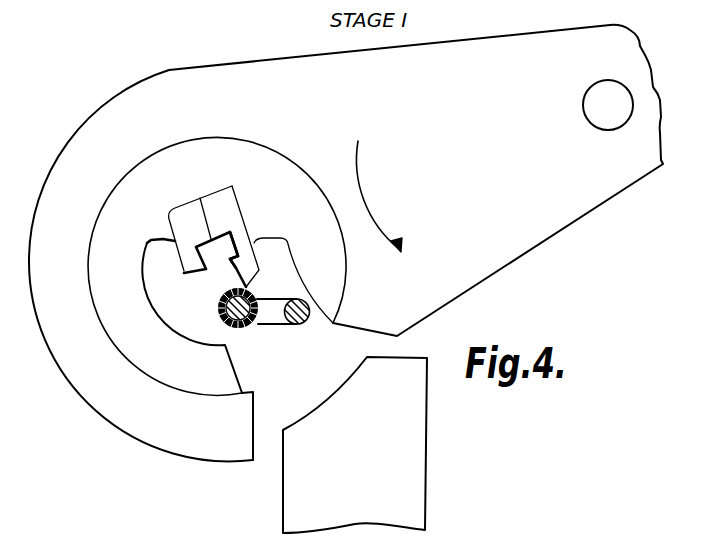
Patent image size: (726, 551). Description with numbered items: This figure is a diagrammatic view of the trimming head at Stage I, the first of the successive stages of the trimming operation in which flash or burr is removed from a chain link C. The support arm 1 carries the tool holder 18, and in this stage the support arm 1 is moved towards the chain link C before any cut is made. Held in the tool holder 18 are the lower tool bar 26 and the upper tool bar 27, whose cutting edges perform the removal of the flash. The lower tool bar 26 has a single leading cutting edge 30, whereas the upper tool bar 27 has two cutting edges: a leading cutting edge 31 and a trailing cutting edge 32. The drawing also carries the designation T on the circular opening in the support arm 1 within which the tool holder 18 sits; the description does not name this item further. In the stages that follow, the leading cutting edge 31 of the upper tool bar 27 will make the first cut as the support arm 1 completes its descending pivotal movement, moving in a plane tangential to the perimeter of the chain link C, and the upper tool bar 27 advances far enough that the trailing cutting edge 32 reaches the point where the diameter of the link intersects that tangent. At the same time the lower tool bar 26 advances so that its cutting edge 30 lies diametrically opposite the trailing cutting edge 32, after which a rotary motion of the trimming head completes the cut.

The support arm 1 is at (479, 274).
The circular track opening T is at (278, 156).
The tool holder 18 is at (192, 376).
The lower tool bar 26 is at (181, 210).
The upper tool bar 27 is at (230, 184).
The leading cutting edge 30 is at (212, 270).
The leading cutting edge 31 is at (243, 287).
The trailing cutting edge 32 is at (239, 256).
The chain link C is at (287, 325).